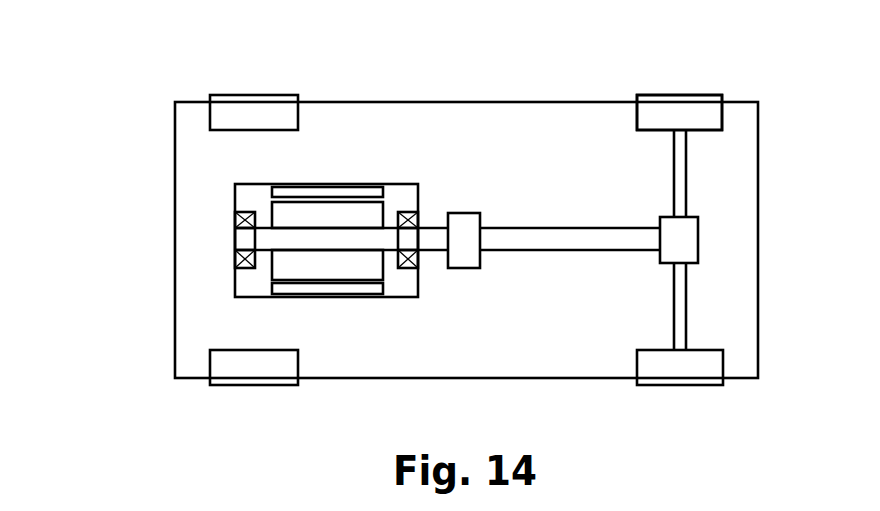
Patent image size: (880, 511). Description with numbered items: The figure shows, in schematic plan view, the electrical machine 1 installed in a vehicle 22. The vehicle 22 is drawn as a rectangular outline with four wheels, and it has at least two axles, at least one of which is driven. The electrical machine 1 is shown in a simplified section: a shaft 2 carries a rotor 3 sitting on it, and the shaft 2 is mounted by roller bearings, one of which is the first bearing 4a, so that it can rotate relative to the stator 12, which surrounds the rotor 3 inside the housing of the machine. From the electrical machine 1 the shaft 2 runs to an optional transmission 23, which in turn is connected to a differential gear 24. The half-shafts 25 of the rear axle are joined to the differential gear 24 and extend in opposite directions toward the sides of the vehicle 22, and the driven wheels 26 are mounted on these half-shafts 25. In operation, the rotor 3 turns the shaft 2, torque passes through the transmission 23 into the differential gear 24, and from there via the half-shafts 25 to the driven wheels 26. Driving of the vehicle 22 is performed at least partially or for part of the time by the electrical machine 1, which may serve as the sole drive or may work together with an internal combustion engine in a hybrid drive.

The vehicle 22 is at (108, 72).
The electrical machine 1 is at (214, 192).
The shaft 2 is at (238, 240).
The rotor 3 is at (287, 265).
The first bearing 4a is at (238, 262).
The stator 12 is at (300, 290).
The transmission 23 is at (465, 222).
The differential gear 24 is at (685, 247).
The half-shafts 25 is at (680, 292).
The driven wheels 26 is at (675, 110).